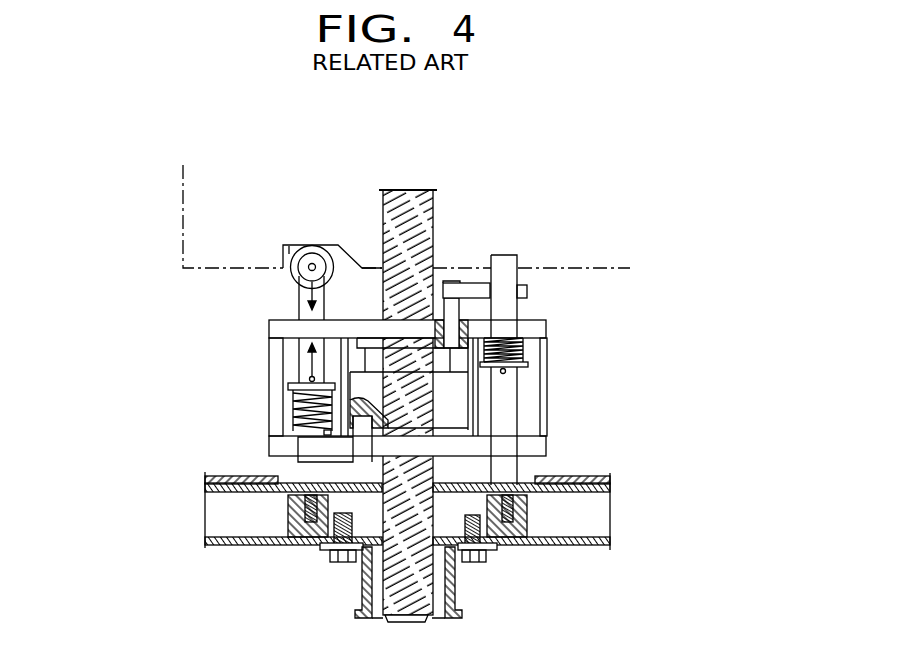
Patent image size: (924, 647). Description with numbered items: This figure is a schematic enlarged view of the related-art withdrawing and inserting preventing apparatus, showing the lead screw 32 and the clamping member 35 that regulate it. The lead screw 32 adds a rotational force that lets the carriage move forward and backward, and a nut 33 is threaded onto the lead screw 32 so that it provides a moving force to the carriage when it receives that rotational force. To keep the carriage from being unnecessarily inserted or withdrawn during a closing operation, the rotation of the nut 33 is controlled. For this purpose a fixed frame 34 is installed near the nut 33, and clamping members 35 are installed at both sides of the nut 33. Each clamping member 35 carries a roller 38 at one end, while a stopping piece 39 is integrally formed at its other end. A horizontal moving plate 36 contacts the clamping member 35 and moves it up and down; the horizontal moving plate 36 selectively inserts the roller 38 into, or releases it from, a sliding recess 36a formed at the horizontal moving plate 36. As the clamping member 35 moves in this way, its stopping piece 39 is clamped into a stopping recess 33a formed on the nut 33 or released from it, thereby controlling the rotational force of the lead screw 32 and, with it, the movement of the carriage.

The lead screw 32 is at (423, 210).
The nut 33 is at (455, 416).
The stopping recess 33a is at (353, 423).
The fixed frame 34 is at (548, 322).
The clamping member 35 is at (507, 387).
The horizontal moving plate 36 is at (190, 212).
The sliding recess 36a is at (296, 243).
The roller 38 is at (298, 270).
The stopping piece 39 is at (363, 442).